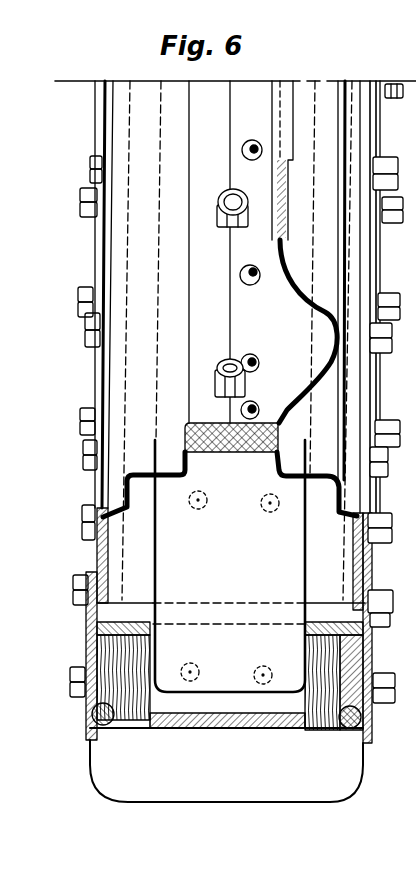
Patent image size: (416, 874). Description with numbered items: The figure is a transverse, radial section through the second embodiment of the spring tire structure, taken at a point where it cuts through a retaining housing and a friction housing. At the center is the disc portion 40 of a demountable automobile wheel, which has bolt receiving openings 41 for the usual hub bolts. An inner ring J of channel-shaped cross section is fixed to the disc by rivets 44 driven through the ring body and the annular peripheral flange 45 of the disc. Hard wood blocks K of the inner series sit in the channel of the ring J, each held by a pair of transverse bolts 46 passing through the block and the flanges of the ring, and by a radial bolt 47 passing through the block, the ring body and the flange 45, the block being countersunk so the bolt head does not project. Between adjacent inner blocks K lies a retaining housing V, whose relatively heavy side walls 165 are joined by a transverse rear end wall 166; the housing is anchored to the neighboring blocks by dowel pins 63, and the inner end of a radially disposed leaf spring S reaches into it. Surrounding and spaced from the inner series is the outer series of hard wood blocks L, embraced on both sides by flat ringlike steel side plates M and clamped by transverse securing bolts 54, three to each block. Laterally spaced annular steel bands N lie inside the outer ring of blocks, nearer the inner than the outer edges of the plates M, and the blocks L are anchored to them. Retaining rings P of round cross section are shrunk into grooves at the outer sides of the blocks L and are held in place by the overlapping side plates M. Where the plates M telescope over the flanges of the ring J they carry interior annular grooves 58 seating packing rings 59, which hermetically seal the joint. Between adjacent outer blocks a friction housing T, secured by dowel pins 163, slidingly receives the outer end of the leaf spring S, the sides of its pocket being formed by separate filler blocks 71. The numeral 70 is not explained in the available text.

The side plate M is at (93, 243).
The retaining housing V is at (187, 427).
The inner ring J is at (287, 463).
The inner hard wood block K is at (333, 532).
The leaf spring S is at (217, 678).
The friction housing T is at (243, 730).
The annular band N is at (90, 621).
The retaining ring P is at (93, 715).
The outer hard wood block L is at (120, 768).
The disc portion 40 is at (320, 367).
The bolt receiving opening 41 is at (283, 223).
The rivet 44 is at (253, 143).
The peripheral flange 45 is at (230, 292).
The transverse bolt 46 is at (90, 165).
The radial bolt 47 is at (227, 197).
The securing bolt 54 is at (82, 297).
The annular groove 58 is at (100, 583).
The packing ring 59 is at (73, 583).
The dowel pin 63 is at (212, 490).
The nut 70 is at (388, 99).
The filler block 71 is at (110, 657).
The dowel pin 163 is at (190, 663).
The side wall 165 is at (287, 680).
The rear end wall 166 is at (262, 420).